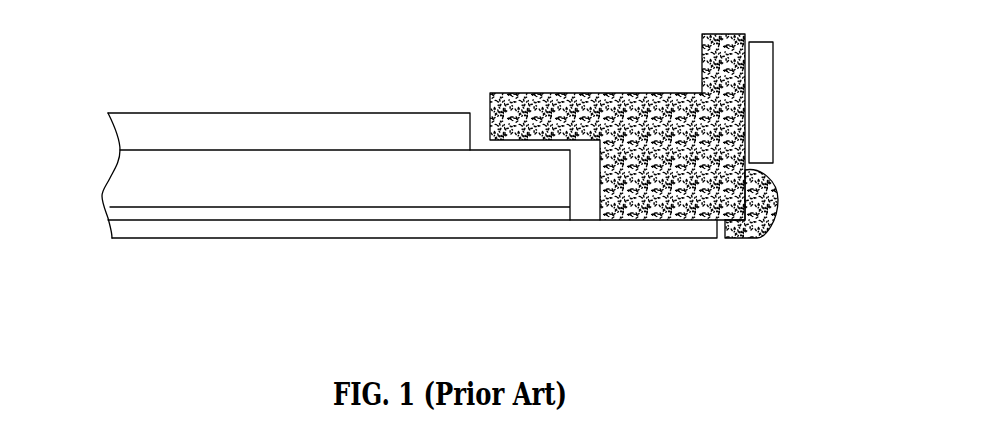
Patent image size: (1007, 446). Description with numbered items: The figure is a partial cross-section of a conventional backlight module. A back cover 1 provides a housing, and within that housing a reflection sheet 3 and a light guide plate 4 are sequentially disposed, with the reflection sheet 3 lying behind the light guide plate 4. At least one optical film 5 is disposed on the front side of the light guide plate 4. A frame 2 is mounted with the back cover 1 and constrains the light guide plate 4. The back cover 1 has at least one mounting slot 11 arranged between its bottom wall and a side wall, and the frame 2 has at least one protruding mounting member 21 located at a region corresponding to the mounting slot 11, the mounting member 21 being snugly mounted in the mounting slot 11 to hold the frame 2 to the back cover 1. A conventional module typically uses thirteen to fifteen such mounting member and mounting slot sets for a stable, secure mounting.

The back cover 1 is at (603, 240).
The mounting slot 11 is at (777, 170).
The frame 2 is at (593, 96).
The mounting member 21 is at (760, 232).
The reflection sheet 3 is at (270, 221).
The light guide plate 4 is at (127, 172).
The optical film 5 is at (290, 114).